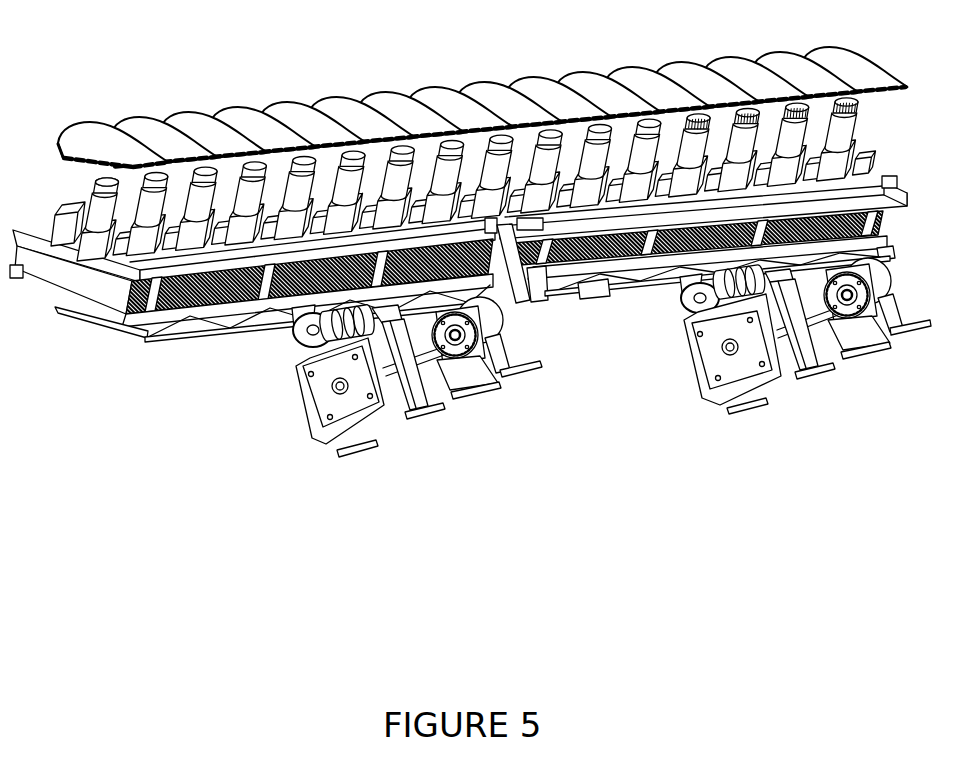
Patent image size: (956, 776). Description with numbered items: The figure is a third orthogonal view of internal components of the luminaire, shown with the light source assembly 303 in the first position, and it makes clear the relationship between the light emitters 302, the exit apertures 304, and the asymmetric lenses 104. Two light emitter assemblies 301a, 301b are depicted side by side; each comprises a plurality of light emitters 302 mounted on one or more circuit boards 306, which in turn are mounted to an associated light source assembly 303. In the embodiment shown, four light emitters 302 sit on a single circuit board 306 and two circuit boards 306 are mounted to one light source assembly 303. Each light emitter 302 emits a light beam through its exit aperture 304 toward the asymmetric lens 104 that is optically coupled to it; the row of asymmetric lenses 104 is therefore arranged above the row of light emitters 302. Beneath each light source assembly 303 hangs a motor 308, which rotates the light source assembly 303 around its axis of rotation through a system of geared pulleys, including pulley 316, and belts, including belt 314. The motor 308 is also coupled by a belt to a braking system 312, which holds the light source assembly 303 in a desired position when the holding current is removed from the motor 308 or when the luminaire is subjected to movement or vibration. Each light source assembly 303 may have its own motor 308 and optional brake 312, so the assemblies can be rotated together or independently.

The asymmetric lens 104 is at (195, 123).
The light emitter assembly 301a is at (657, 415).
The light emitter assembly 301b is at (276, 405).
The light emitter 302 is at (98, 213).
The light source assembly 303 is at (228, 300).
The exit aperture 304 is at (100, 184).
The circuit board 306 is at (222, 247).
The motor 308 is at (313, 427).
The braking system 312 is at (297, 335).
The belt 314 is at (437, 390).
The geared pulley 316 is at (500, 360).